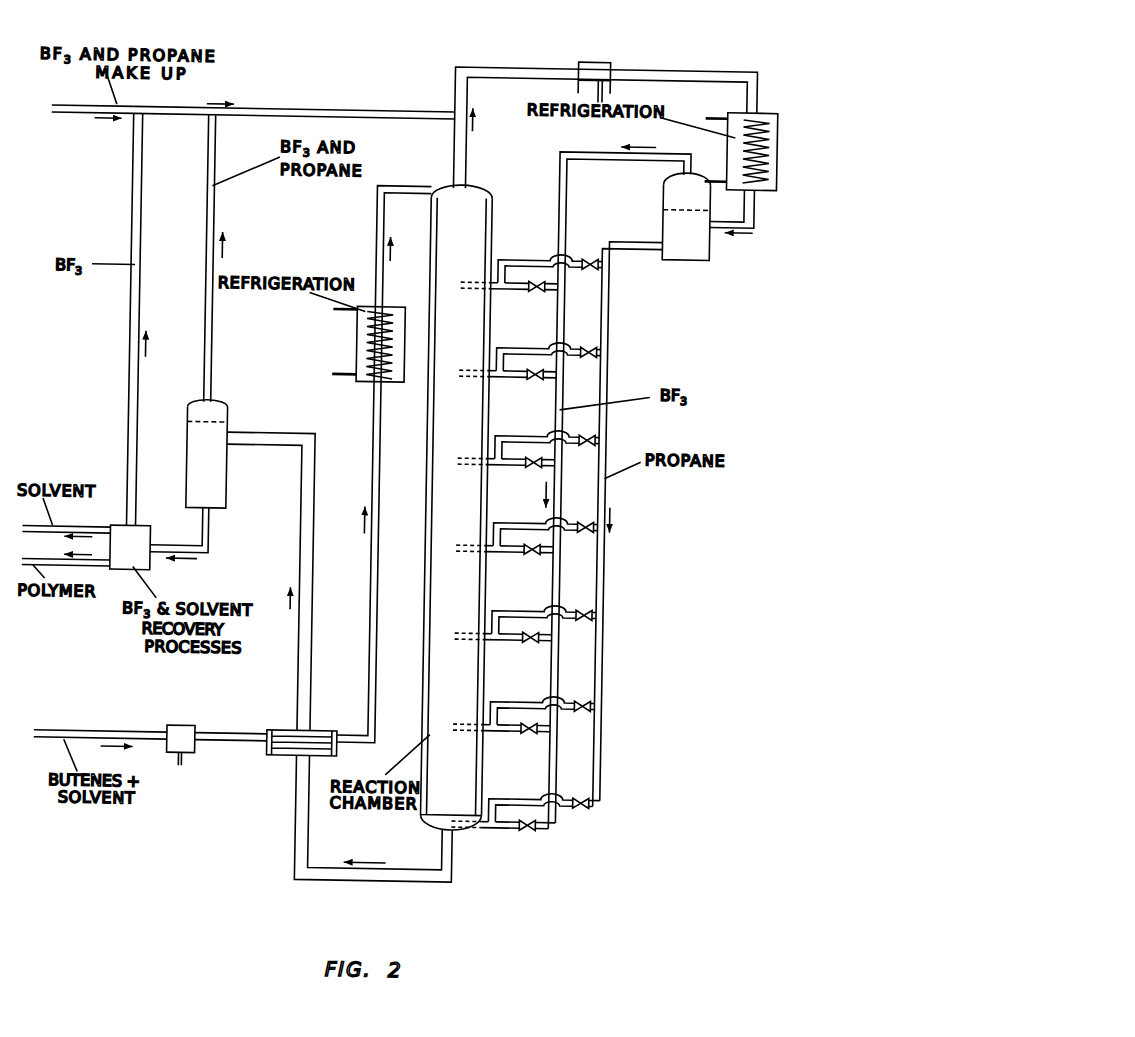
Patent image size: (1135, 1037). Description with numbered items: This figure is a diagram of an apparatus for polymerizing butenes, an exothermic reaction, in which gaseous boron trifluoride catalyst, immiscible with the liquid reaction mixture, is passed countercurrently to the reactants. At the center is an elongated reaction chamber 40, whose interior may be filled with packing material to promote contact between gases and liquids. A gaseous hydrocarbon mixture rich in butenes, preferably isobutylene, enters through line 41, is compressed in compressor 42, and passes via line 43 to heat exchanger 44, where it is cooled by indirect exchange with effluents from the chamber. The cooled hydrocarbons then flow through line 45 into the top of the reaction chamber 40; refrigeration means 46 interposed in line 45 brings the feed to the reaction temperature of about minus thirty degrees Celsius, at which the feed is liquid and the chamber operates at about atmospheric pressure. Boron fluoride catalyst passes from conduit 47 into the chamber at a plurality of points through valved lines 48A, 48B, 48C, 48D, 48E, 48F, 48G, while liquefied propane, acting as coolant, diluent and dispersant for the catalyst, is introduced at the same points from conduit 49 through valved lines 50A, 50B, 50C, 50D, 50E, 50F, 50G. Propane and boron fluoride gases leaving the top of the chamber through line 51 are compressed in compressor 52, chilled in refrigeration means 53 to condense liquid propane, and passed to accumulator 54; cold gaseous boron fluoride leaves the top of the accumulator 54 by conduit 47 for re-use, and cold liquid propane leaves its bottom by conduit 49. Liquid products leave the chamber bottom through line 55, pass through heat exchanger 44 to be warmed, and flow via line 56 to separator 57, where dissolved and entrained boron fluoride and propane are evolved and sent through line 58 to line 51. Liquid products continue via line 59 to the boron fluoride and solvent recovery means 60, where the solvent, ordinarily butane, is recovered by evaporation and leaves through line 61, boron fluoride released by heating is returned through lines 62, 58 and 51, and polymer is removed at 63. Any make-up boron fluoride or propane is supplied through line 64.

The reaction chamber 40 is at (440, 518).
The line 41 is at (126, 739).
The compressor 42 is at (189, 732).
The line 43 is at (221, 737).
The heat exchanger 44 is at (362, 712).
The line 45 is at (372, 213).
The refrigeration means 46 is at (359, 346).
The conduit 47 is at (558, 218).
The valved line 48A is at (508, 289).
The valved line 48B is at (508, 377).
The valved line 48C is at (508, 465).
The valved line 48D is at (508, 552).
The valved line 48E is at (508, 640).
The valved line 48F is at (508, 731).
The valved line 48G is at (508, 828).
The conduit 49 is at (606, 559).
The valved line 50A is at (575, 268).
The valved line 50B is at (575, 356).
The valved line 50C is at (575, 444).
The valved line 50D is at (575, 531).
The valved line 50E is at (575, 619).
The valved line 50F is at (566, 708).
The valved line 50G is at (566, 808).
The line 51 is at (495, 77).
The compressor 52 is at (592, 65).
The refrigeration means 53 is at (763, 115).
The accumulator 54 is at (688, 251).
The line 55 is at (303, 798).
The line 56 is at (304, 544).
The separator 57 is at (226, 416).
The line 58 is at (318, 109).
The line 59 is at (212, 532).
The boron fluoride and solvent recovery means 60 is at (142, 535).
The line 61 is at (78, 533).
The line 62 is at (145, 218).
The polymer outlet 63 is at (44, 565).
The line 64 is at (68, 114).